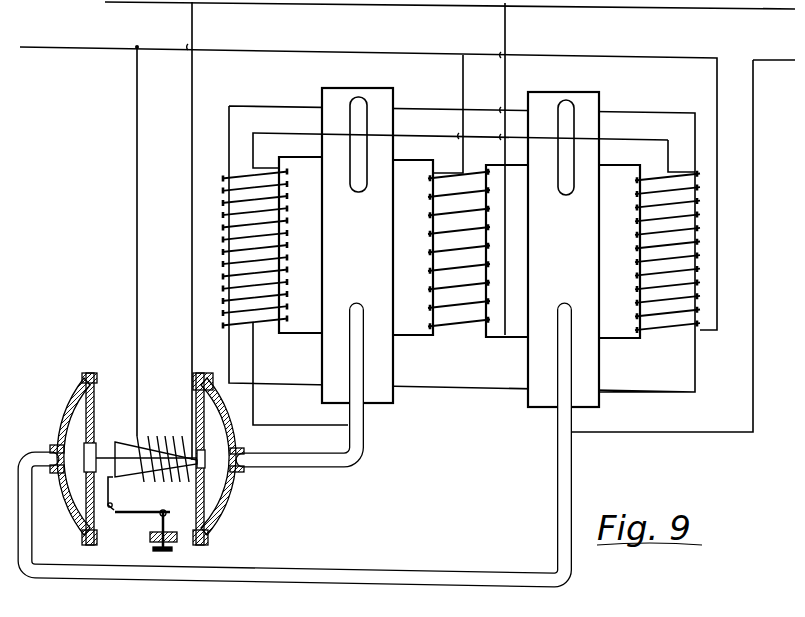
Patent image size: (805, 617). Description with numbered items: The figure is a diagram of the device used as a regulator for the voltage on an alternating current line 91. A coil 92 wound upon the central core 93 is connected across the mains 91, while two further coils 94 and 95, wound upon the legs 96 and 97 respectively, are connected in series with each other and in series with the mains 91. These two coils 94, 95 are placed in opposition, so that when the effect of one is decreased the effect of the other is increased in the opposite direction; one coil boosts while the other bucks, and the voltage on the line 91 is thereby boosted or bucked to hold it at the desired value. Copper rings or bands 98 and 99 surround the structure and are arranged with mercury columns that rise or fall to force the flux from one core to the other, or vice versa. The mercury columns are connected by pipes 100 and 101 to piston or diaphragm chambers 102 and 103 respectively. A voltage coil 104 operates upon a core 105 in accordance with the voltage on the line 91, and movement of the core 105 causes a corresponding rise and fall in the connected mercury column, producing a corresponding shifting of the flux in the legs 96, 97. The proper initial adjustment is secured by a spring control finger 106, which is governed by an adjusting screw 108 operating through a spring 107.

The alternating current line 91 is at (102, 46).
The coil 92 is at (445, 205).
The central core 93 is at (470, 172).
The coil 94 is at (224, 224).
The coil 95 is at (697, 248).
The leg 96 is at (252, 185).
The leg 97 is at (668, 190).
The copper ring or band 98 is at (376, 390).
The copper ring or band 99 is at (543, 384).
The pipe 100 is at (327, 462).
The pipe 101 is at (557, 480).
The piston or diaphragm chamber 102 is at (228, 500).
The piston or diaphragm chamber 103 is at (80, 410).
The voltage coil 104 is at (173, 442).
The core 105 is at (120, 452).
The spring control finger 106 is at (112, 492).
The spring 107 is at (145, 515).
The adjusting screw 108 is at (200, 528).